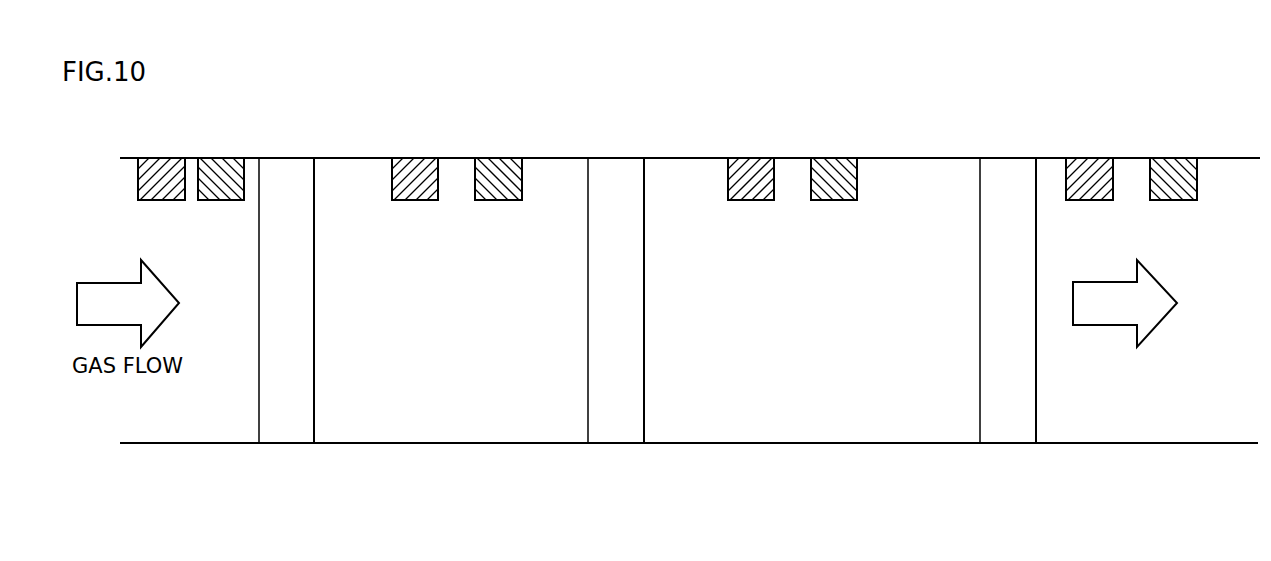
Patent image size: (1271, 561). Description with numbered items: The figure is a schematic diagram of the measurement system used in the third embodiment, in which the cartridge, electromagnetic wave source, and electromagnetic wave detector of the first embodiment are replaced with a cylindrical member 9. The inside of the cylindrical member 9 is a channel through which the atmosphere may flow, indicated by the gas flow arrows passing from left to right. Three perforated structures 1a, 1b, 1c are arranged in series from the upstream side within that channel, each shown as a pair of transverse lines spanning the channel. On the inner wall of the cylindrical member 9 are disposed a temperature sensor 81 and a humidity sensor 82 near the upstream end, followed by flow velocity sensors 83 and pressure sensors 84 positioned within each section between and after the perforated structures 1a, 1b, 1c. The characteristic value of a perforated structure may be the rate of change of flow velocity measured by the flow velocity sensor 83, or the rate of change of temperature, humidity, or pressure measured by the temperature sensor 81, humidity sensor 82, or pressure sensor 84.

The cylindrical member 9 is at (935, 157).
The perforated structure 1a is at (287, 423).
The perforated structure 1b is at (616, 423).
The perforated structure 1c is at (1008, 423).
The temperature sensor 81 is at (158, 170).
The humidity sensor 82 is at (222, 172).
The flow velocity sensor 83 is at (411, 171).
The pressure sensor 84 is at (498, 172).